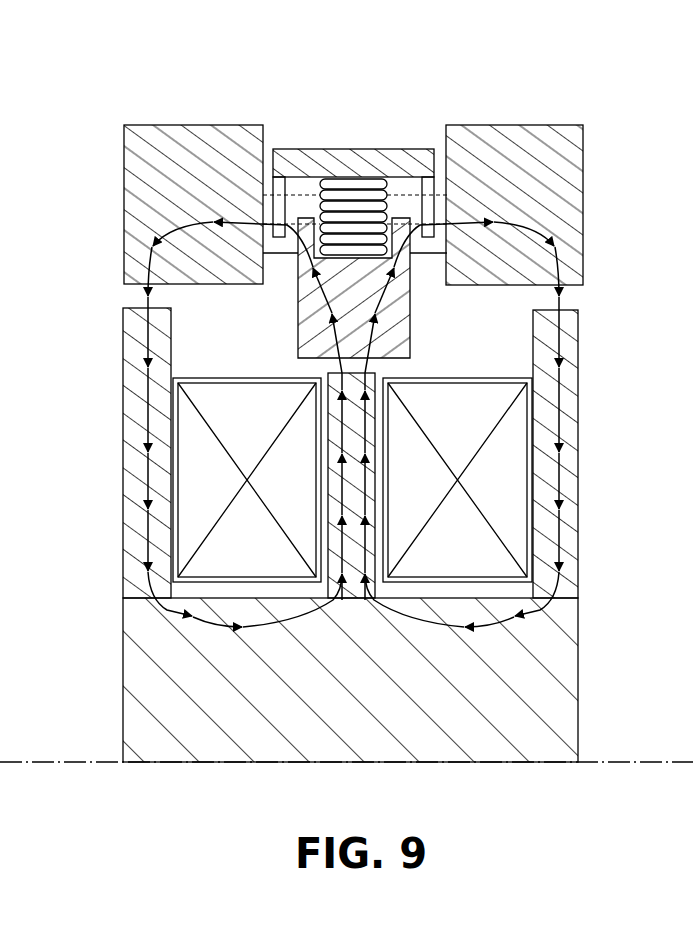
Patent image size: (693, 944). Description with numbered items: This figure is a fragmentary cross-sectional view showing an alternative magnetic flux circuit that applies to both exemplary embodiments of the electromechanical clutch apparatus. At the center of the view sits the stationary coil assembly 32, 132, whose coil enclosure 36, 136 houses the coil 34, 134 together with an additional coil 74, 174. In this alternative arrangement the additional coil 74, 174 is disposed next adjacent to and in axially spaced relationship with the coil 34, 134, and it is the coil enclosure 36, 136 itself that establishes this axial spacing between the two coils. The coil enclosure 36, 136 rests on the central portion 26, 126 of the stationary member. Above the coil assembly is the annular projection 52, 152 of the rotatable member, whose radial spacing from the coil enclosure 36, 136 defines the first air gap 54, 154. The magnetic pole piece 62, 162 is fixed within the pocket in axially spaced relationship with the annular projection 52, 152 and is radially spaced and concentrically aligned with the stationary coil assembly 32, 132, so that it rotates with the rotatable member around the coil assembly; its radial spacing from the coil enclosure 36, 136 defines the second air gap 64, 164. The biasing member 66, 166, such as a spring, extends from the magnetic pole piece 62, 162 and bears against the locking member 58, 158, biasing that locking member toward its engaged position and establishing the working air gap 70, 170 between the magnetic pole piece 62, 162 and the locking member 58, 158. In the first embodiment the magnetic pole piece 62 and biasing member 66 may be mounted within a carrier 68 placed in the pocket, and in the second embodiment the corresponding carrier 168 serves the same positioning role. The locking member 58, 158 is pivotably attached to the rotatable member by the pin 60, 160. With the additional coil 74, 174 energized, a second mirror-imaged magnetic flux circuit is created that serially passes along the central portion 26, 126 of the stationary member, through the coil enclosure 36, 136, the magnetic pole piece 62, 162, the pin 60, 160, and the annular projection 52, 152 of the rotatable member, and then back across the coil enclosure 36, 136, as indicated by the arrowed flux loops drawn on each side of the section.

The central portion 26 is at (346, 794).
The central portion 126 is at (430, 765).
The stationary coil assembly 32 is at (105, 453).
The stationary coil assembly 132 is at (121, 390).
The coil 34 is at (350, 701).
The coil 134 is at (220, 578).
The coil enclosure 36 is at (343, 468).
The coil enclosure 136 is at (580, 422).
The annular projection 52 is at (316, 179).
The annular projection 152 is at (170, 140).
The first air gap 54 is at (352, 253).
The first air gap 154 is at (132, 297).
The locking member 58 is at (353, 109).
The locking member 158 is at (309, 148).
The pin 60 is at (304, 147).
The pin 160 is at (268, 172).
The magnetic pole piece 62 is at (413, 288).
The magnetic pole piece 162 is at (412, 304).
The second air gap 64 is at (529, 348).
The second air gap 164 is at (397, 368).
The biasing member 66 is at (419, 170).
The biasing member 166 is at (385, 192).
The carrier 68 is at (510, 160).
The stop 168 is at (433, 260).
The working air gap 70 is at (278, 107).
The working air gap 170 is at (306, 196).
The additional coil 74 is at (347, 488).
The additional coil 174 is at (215, 378).